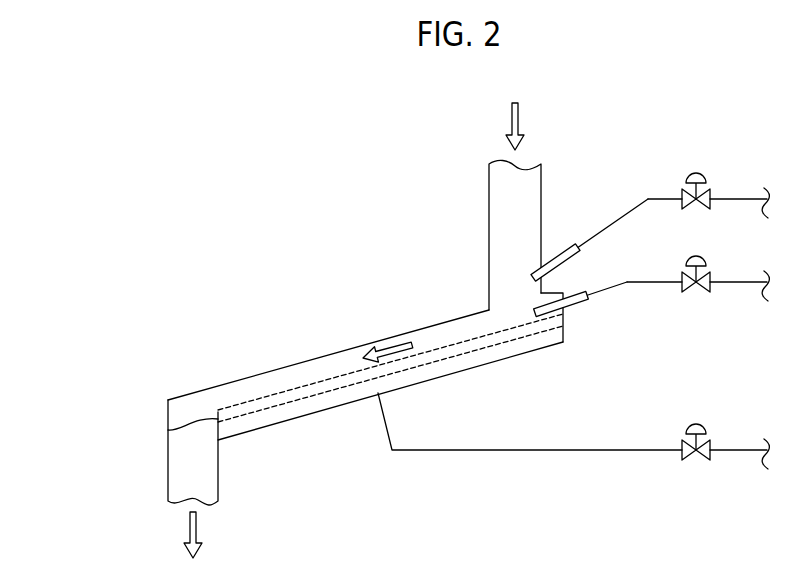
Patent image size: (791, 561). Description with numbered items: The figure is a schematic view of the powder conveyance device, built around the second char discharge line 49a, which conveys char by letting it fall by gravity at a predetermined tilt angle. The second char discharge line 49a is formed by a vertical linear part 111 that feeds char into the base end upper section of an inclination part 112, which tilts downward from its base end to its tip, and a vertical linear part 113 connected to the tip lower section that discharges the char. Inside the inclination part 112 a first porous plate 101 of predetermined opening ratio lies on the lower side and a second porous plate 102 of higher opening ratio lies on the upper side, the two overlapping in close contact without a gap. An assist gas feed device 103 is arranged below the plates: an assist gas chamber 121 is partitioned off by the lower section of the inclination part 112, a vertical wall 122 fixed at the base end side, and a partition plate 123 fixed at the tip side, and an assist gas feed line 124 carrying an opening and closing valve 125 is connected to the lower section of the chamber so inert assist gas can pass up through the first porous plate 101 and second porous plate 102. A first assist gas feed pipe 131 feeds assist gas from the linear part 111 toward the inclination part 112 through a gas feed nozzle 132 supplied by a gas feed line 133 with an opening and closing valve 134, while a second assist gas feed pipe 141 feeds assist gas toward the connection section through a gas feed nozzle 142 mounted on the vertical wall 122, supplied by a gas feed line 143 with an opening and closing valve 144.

The second char discharge line 49a is at (379, 287).
The first porous plate 101 is at (487, 350).
The second porous plate 102 is at (315, 384).
The assist gas feed device 103 is at (470, 462).
The linear part 111 is at (489, 183).
The inclination part 112 is at (285, 367).
The linear part 113 is at (168, 476).
The assist gas chamber 121 is at (423, 372).
The vertical wall 122 is at (563, 330).
The partition plate 123 is at (168, 428).
The assist gas feed line 124 is at (640, 449).
The opening and closing valve 125 is at (713, 446).
The first assist gas feed pipe 131 is at (567, 213).
The gas feed nozzle 132 is at (578, 255).
The gas feed line 133 is at (668, 198).
The opening and closing valve 134 is at (713, 192).
The second assist gas feed pipe 141 is at (638, 273).
The gas feed nozzle 142 is at (580, 299).
The gas feed line 143 is at (732, 284).
The opening and closing valve 144 is at (713, 277).